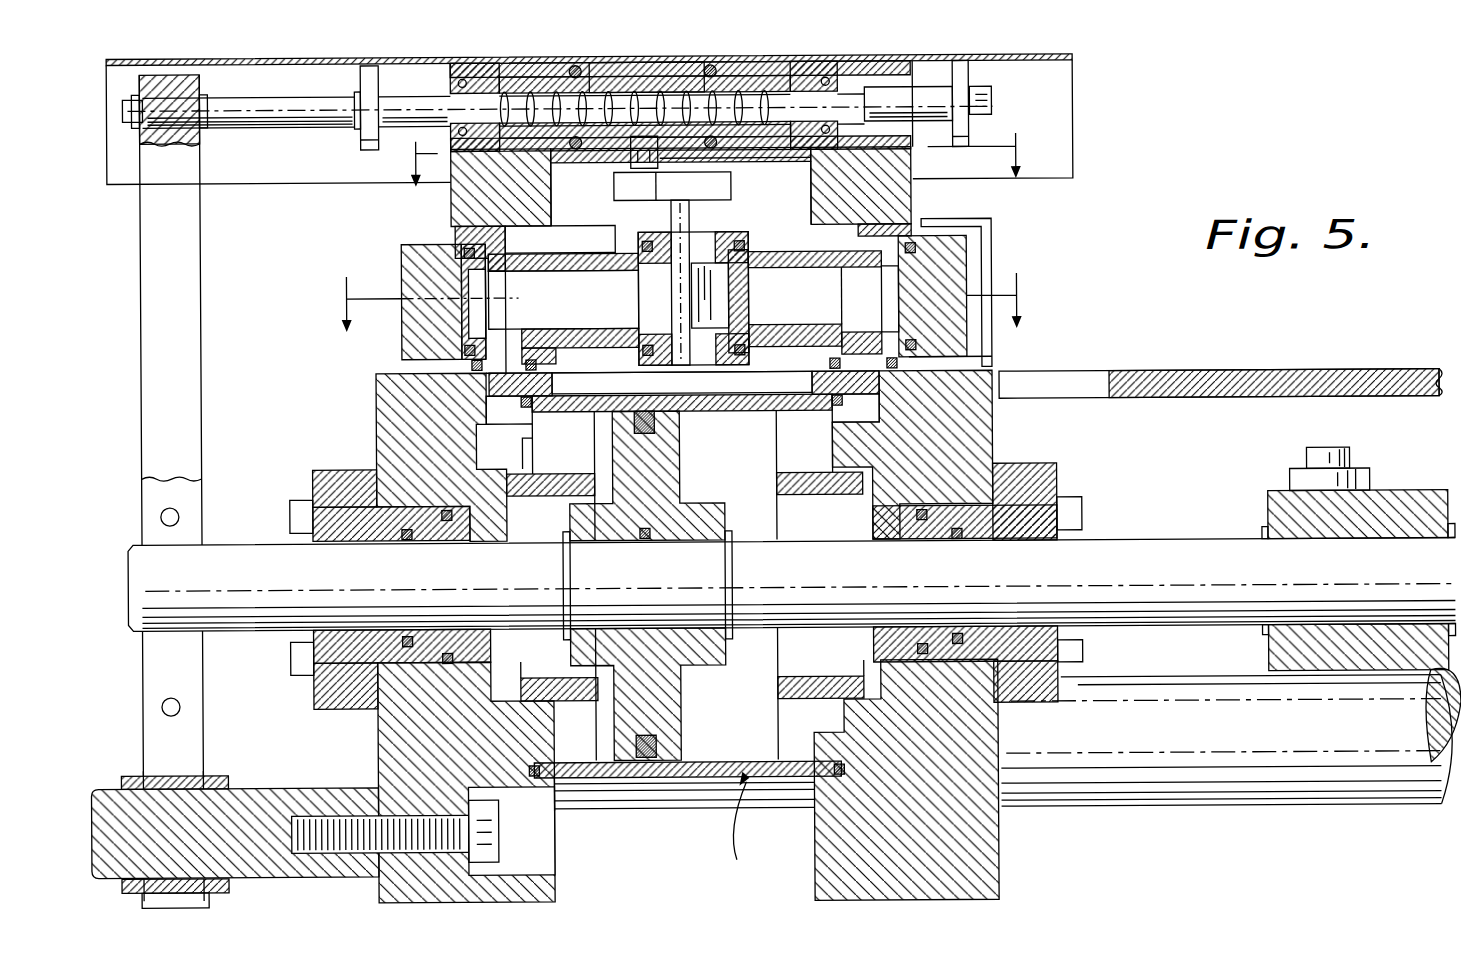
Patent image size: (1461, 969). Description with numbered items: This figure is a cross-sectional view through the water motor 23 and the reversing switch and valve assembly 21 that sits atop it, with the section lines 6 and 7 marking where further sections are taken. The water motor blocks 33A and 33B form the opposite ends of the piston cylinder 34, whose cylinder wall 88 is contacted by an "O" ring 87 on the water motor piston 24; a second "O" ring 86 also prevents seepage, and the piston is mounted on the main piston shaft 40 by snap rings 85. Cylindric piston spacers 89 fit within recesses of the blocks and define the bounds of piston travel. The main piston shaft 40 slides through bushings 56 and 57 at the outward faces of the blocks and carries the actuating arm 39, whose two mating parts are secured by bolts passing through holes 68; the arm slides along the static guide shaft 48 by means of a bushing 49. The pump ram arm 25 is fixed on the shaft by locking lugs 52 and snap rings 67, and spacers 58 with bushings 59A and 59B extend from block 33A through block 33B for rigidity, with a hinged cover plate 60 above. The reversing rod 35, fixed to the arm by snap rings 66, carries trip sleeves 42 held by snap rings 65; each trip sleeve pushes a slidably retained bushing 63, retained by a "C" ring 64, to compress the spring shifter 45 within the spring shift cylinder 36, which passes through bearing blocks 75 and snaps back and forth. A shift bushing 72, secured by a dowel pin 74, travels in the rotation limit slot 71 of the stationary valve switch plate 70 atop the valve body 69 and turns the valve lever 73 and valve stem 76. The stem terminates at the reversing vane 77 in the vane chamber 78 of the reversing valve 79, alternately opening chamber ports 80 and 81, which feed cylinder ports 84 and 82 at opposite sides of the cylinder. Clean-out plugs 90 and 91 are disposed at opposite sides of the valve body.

The section line 6- 6 is at (707, 146).
The section line 7- 7 is at (679, 291).
The reversing switch and valve assembly 21 is at (938, 68).
The water motor 23 is at (740, 827).
The water motor piston 24 is at (682, 696).
The pump ram arm 25 is at (1425, 494).
The water motor block 33A is at (556, 883).
The water motor block 33B is at (1000, 876).
The piston cylinder 34 is at (700, 779).
The reversing rod 35 is at (276, 102).
The spring shift cylinder 36 is at (544, 66).
The actuating arm 39 is at (152, 378).
The main piston shaft 40 is at (1200, 522).
The trip sleeve 42 is at (370, 146).
The spring shifter 45 is at (642, 88).
The static guide shaft 48 is at (293, 868).
The bushing 49 is at (222, 780).
The locking lug 52 is at (1292, 481).
The bushing 56 is at (355, 707).
The bushing 57 is at (1048, 468).
The spacer 58 is at (1435, 733).
The bushing 59A is at (758, 806).
The bushing 59B is at (1298, 808).
The hinged cover plate 60 is at (1293, 372).
The bushing 63 is at (470, 78).
The "C" ring 64 is at (461, 82).
The snap ring 65 is at (355, 124).
The snap ring 66 is at (138, 93).
The snap ring 67 is at (1448, 542).
The hole 68 is at (161, 514).
The valve body 69 is at (898, 234).
The valve switch plate 70 is at (535, 223).
The rotation limit slot 71 is at (746, 160).
The shift bushing 72 is at (630, 156).
The valve lever 73 is at (728, 190).
The dowel pin 74 is at (583, 65).
The bearing block 75 is at (494, 62).
The valve stem 76 is at (672, 215).
The reversing vane 77 is at (660, 298).
The vane chamber 78 is at (738, 282).
The reversing valve 79 is at (452, 229).
The chamber port 80 is at (640, 293).
The chamber port 81 is at (735, 311).
The cylinder port 82 is at (855, 336).
The cylinder port 84 is at (510, 340).
The snap ring 85 is at (565, 530).
The "O" ring 86 is at (646, 541).
The "O" ring 87 is at (634, 745).
The cylinder wall 88 is at (595, 787).
The cylindric piston spacer 89 is at (586, 473).
The clean-out plug 90 is at (410, 330).
The clean-out plug 91 is at (968, 230).